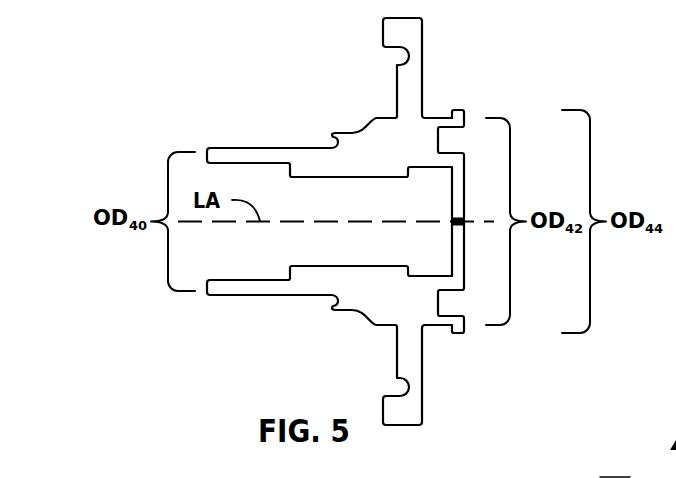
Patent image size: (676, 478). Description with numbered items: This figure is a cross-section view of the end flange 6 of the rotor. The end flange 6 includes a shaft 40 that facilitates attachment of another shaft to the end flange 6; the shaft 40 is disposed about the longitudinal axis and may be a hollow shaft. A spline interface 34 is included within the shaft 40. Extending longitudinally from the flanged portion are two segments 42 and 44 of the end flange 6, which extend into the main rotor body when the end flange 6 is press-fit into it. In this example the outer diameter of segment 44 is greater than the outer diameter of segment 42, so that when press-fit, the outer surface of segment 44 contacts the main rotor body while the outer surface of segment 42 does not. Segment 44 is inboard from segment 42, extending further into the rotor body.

The end flange 6 is at (532, 52).
The spline interface 34 is at (282, 235).
The shaft 40 is at (239, 147).
The segment 42 is at (433, 118).
The segment 44 is at (458, 110).